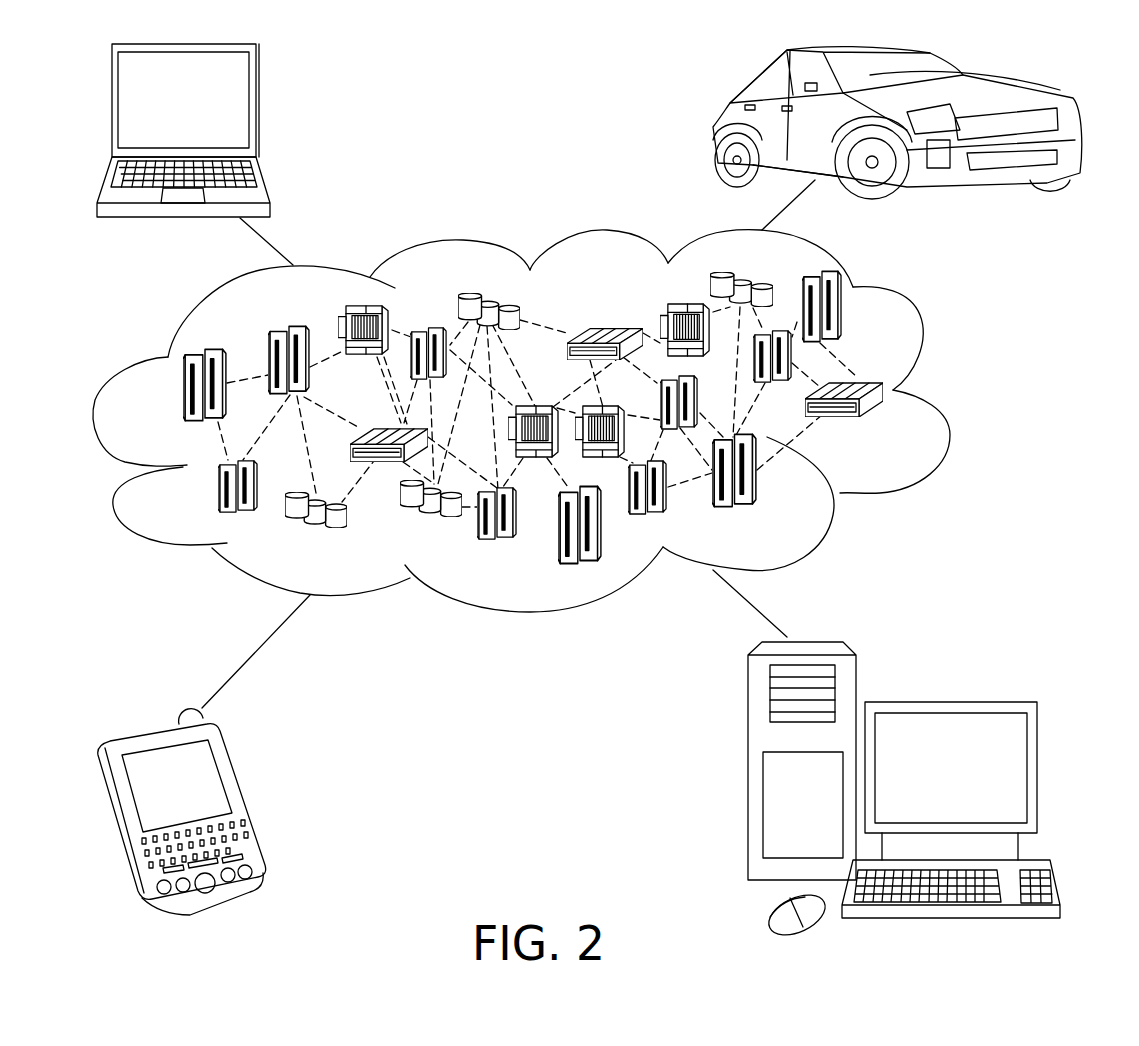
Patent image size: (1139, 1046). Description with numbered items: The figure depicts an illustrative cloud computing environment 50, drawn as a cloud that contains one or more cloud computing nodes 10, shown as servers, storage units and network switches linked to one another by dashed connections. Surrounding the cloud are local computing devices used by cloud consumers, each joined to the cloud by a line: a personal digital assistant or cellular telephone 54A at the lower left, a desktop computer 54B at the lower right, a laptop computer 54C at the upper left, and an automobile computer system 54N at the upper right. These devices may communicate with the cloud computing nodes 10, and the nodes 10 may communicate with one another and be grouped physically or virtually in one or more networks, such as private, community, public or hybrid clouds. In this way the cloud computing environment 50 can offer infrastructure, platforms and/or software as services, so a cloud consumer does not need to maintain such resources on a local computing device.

The cloud computing node 10 is at (885, 427).
The cloud computing environment 50 is at (549, 421).
The personal digital assistant (PDA) or cellular telephone 54A is at (244, 800).
The desktop computer 54B is at (948, 700).
The laptop computer 54C is at (256, 110).
The automobile computer system 54N is at (717, 126).